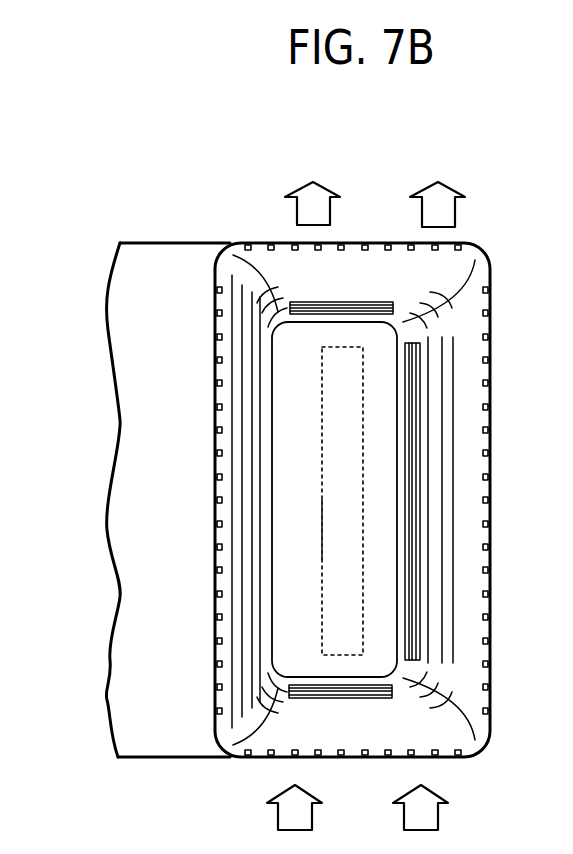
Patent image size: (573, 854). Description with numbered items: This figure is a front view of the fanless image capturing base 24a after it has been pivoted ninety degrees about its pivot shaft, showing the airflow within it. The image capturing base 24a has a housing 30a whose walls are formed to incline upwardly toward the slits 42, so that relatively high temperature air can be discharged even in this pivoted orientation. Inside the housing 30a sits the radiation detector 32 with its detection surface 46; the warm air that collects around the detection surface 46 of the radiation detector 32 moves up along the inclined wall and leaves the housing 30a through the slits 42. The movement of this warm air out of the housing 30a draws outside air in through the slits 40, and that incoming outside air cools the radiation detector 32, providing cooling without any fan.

The image capturing base 24a is at (496, 360).
The housing 30a is at (490, 446).
The slits 42 is at (390, 243).
The slits 40 is at (346, 302).
The radiation detector 32 is at (365, 552).
The detection surface 46 is at (320, 536).